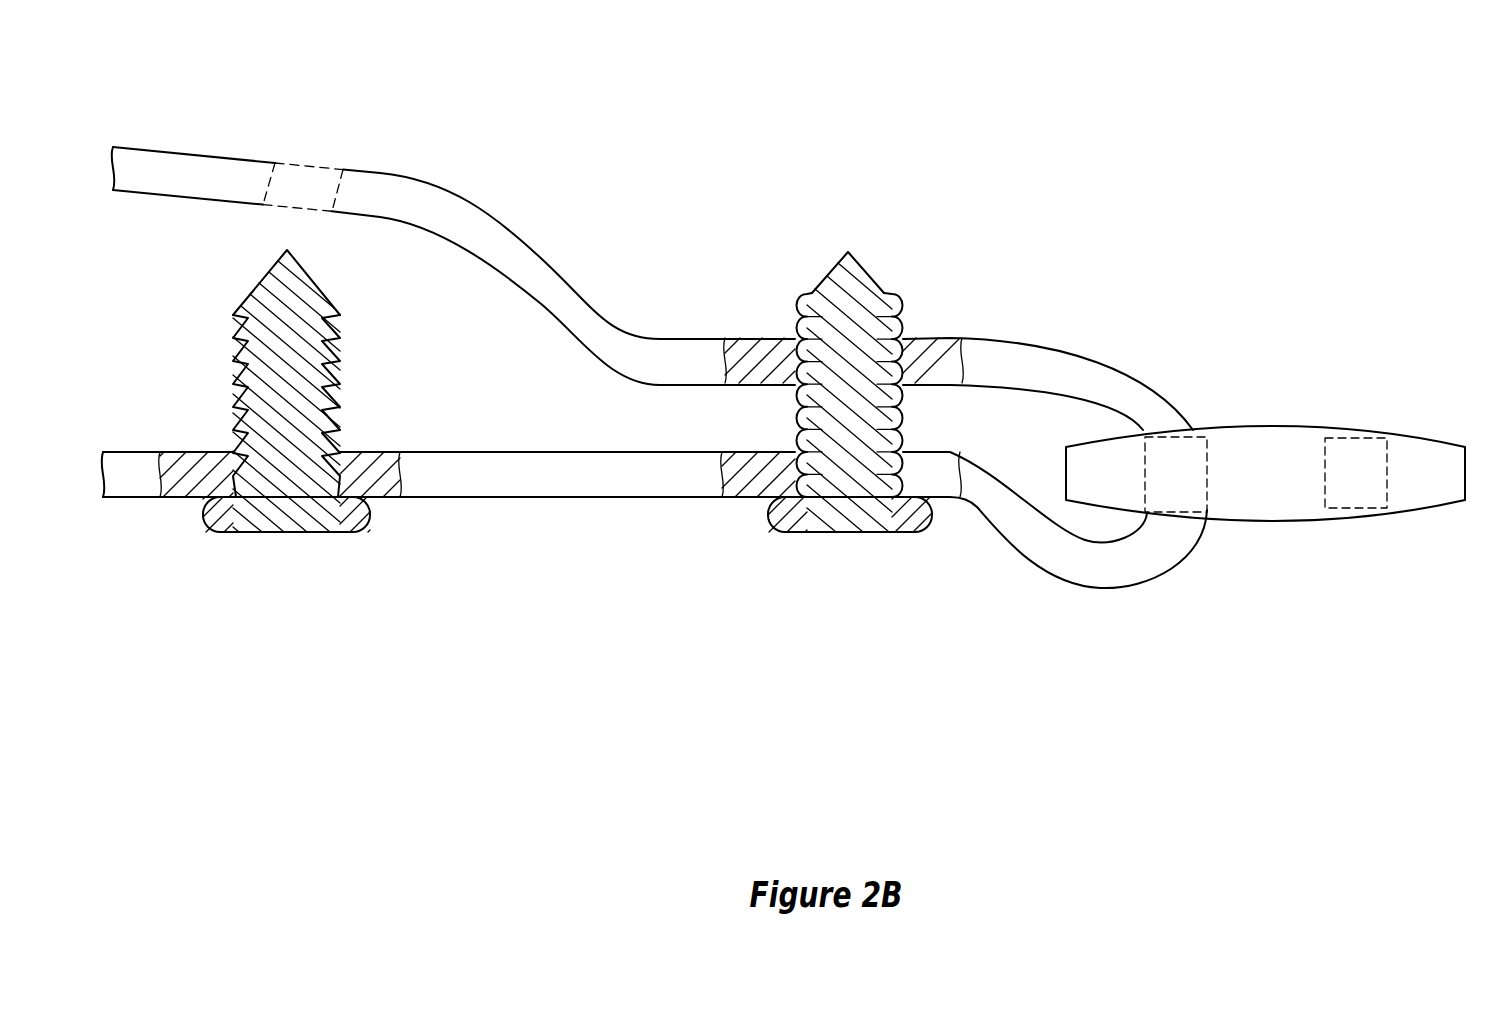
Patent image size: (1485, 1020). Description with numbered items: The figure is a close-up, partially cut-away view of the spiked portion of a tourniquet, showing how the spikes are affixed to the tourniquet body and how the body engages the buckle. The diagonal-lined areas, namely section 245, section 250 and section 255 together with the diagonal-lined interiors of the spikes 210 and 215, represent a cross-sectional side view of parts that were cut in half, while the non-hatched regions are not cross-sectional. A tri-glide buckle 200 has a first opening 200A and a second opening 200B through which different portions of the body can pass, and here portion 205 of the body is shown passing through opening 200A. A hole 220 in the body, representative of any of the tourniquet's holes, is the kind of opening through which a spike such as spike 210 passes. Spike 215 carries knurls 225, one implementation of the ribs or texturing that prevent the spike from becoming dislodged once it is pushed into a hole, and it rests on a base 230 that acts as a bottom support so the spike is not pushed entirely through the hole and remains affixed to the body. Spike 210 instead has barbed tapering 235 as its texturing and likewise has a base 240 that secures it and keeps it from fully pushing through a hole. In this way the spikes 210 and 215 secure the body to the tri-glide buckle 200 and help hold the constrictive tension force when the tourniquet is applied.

The tri-glide buckle 200 is at (1265, 485).
The first opening 200A is at (1208, 502).
The second opening 200B is at (1388, 487).
The portion of the body 205 is at (1023, 562).
The spike 210 is at (304, 386).
The spike 215 is at (888, 368).
The hole 220 is at (316, 162).
The knurls 225 is at (906, 303).
The base 230 is at (832, 532).
The tapering 235 is at (342, 333).
The base 240 is at (287, 532).
The section 245 is at (168, 497).
The section 250 is at (740, 497).
The section 255 is at (750, 339).